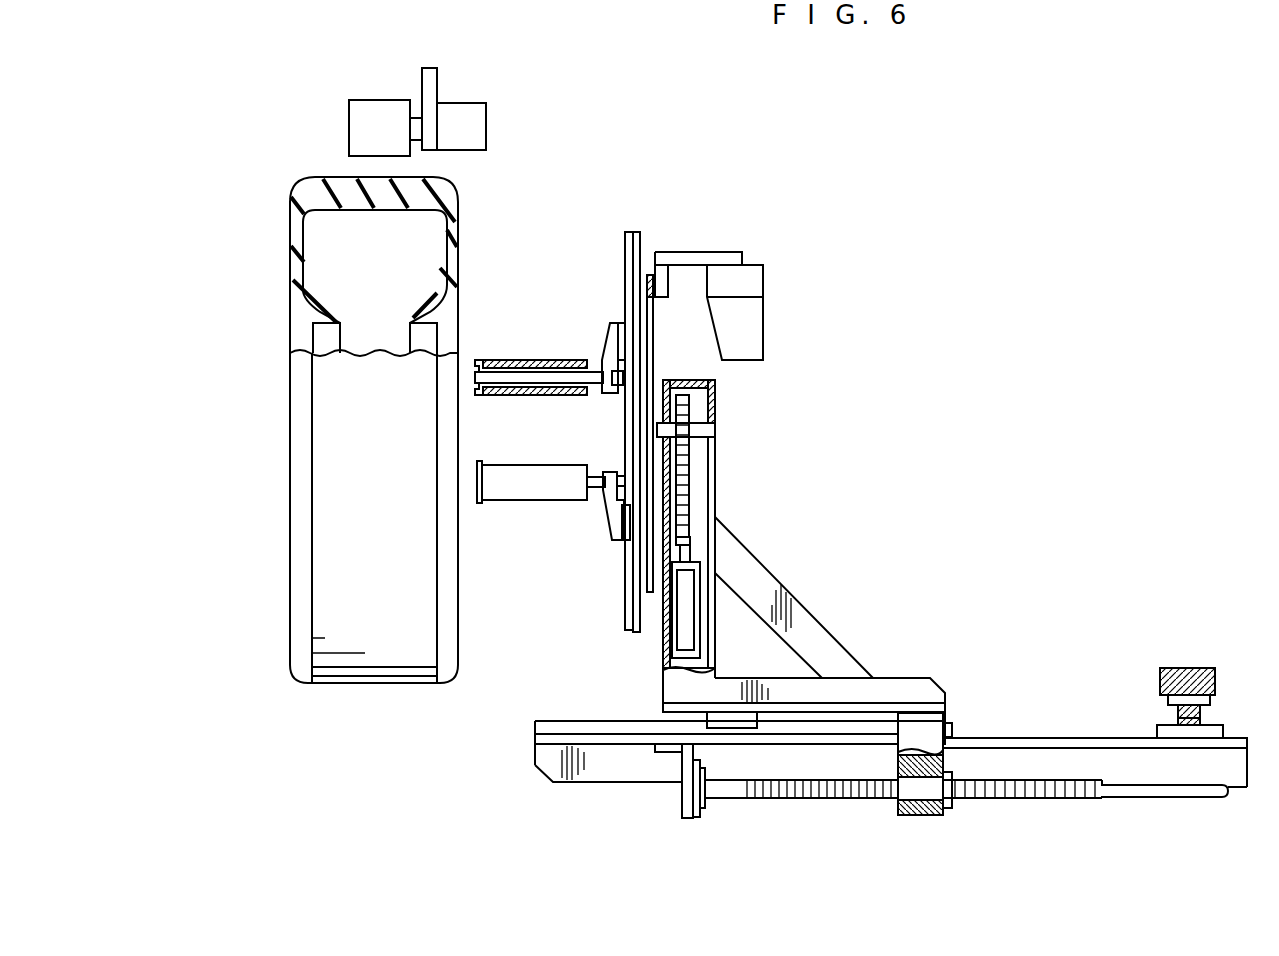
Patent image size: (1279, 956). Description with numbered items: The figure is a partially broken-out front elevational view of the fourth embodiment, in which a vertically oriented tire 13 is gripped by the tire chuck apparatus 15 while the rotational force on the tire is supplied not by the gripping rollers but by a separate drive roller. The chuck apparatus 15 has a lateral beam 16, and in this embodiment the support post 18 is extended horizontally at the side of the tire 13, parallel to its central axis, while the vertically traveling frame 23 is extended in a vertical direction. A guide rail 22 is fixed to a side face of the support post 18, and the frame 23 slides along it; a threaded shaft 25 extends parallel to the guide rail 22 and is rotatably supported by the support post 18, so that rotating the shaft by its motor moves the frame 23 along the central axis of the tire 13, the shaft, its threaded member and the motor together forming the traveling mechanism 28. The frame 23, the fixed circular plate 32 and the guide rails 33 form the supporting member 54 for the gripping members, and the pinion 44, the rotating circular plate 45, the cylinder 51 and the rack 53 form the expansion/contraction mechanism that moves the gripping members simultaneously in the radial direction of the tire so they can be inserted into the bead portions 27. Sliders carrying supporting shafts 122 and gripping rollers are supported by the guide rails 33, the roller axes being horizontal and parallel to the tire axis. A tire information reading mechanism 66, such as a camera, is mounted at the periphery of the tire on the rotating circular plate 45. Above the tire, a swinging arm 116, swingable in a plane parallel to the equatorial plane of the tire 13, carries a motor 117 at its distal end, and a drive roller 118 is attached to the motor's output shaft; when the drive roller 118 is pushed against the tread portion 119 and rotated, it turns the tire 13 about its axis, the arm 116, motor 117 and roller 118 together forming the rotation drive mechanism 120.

The rotation drive mechanism 120 is at (548, 77).
The drive roller 118 is at (376, 110).
The swinging arm 116 is at (437, 92).
The motor 117 is at (488, 132).
The tread portion 119 is at (437, 183).
The tire 13 is at (464, 240).
The bead portions 27 is at (342, 320).
The guide rails 33 is at (625, 262).
The fixed circular plate 32 is at (640, 242).
The rotating circular plate 45 is at (652, 330).
The tire information reading mechanism 66 is at (763, 340).
The pinion 44 is at (709, 418).
The rack 53 is at (689, 492).
The cylinder 51 is at (687, 638).
The supporting member 54 is at (740, 577).
The tire chuck apparatus 15 is at (825, 617).
The vertically traveling frame 23 is at (665, 692).
The guide rail 22 is at (568, 720).
The support post 18 is at (637, 767).
The threaded shaft 25 is at (728, 796).
The vertically traveling mechanism 28 is at (1011, 804).
The lateral beam 16 is at (1160, 675).
The supporting shafts 122 is at (541, 374).